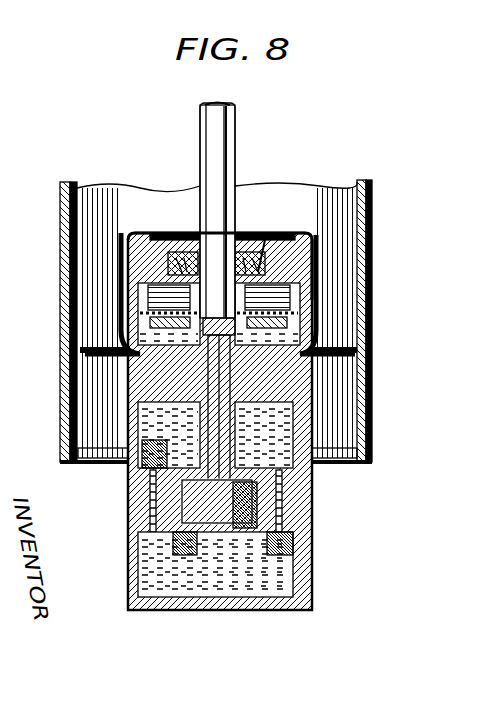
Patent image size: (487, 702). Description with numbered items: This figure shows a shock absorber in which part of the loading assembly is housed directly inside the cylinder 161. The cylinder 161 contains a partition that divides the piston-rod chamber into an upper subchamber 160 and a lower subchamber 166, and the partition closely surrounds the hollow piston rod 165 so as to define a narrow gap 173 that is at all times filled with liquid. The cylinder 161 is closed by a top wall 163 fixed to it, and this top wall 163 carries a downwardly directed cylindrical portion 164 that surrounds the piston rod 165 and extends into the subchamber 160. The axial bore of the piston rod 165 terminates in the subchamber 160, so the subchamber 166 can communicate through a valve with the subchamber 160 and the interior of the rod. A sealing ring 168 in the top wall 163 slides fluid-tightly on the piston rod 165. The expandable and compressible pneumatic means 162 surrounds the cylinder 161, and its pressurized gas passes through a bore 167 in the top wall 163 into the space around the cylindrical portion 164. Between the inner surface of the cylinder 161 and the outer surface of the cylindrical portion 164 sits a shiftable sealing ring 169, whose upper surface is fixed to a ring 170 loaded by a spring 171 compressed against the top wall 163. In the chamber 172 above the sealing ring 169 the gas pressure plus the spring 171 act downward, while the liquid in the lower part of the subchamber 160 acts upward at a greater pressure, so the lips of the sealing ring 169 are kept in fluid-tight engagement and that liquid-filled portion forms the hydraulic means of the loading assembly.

The subchamber 160 is at (266, 343).
The cylinder 161 is at (300, 520).
The expandable and compressible pneumatic means 162 is at (373, 268).
The top wall 163 is at (258, 243).
The cylindrical portion 164 is at (183, 342).
The piston rod 165 is at (230, 158).
The subchamber 166 is at (311, 448).
The bore 167 is at (313, 254).
The sealing ring 168 is at (186, 243).
The sealing ring 169 is at (137, 330).
The ring 170 is at (137, 305).
The spring 171 is at (128, 285).
The chamber 172 is at (323, 312).
The narrow gap 173 is at (235, 392).